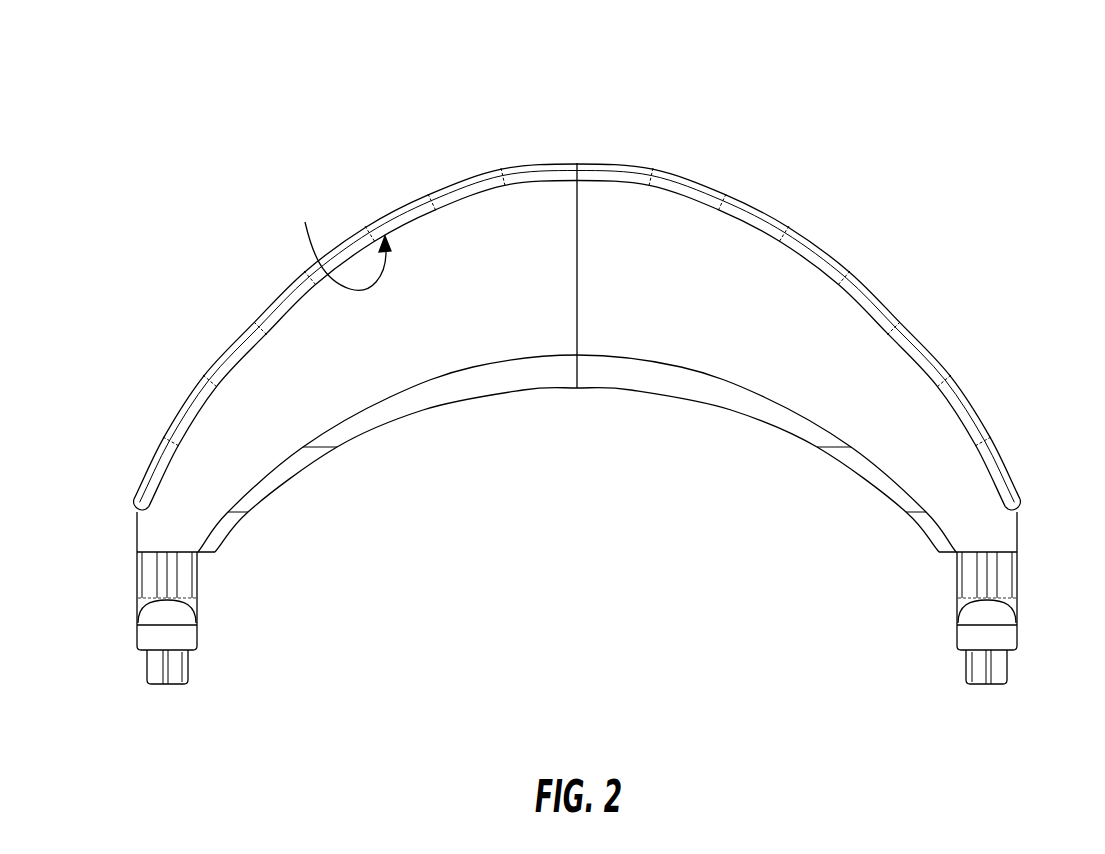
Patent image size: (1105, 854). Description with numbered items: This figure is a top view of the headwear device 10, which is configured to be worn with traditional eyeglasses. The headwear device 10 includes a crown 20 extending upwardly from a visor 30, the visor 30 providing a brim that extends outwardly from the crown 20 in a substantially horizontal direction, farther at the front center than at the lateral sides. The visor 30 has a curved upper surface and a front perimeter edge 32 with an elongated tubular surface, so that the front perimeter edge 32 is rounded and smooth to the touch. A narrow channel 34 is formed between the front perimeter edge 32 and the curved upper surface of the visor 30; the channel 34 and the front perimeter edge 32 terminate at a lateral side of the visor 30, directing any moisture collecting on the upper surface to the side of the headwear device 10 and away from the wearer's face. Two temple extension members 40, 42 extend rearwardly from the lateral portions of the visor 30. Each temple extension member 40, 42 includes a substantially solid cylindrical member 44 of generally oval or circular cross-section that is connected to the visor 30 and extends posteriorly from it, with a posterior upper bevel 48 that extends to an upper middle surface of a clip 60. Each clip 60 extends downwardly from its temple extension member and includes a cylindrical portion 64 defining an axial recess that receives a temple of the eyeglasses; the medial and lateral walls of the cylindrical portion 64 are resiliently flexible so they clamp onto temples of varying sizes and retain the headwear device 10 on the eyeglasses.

The headwear device 10 is at (913, 103).
The crown 20 is at (537, 377).
The visor 30 is at (647, 217).
The front perimeter edge 32 is at (457, 186).
The channel 34 is at (342, 244).
The temple extension member 40 is at (137, 578).
The temple extension member 42 is at (1018, 580).
The cylindrical member 44 is at (187, 577).
The posterior upper bevel 48 is at (152, 635).
The clip 60 is at (143, 677).
The cylindrical portion 64 is at (165, 667).